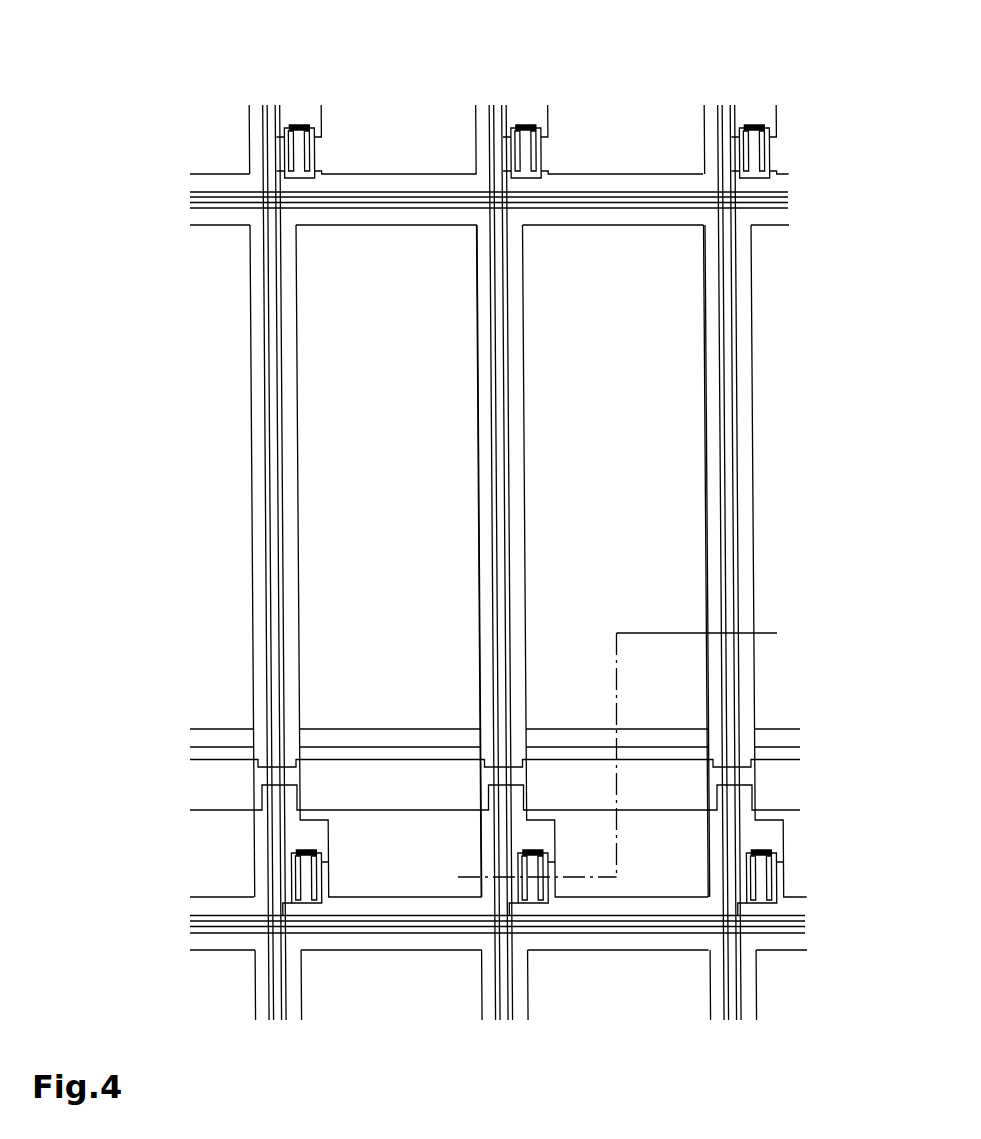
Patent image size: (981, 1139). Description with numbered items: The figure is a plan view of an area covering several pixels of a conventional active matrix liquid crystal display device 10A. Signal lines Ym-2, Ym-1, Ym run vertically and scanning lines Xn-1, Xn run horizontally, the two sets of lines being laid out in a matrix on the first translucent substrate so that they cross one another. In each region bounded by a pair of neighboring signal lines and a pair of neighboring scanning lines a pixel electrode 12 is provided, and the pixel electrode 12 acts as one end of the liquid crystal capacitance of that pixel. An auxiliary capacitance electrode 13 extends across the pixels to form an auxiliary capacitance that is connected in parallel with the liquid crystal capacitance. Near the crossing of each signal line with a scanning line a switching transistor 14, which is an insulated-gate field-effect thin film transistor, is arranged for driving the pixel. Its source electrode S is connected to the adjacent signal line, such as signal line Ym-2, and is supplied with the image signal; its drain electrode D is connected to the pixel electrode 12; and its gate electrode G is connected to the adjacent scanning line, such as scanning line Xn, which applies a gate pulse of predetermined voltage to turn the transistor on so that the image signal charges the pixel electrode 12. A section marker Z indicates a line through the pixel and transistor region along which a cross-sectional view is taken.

The liquid crystal display device 10A is at (220, 47).
The pixel electrode 12 is at (393, 382).
The auxiliary capacitance electrode 13 is at (343, 778).
The switching transistor 14 is at (264, 862).
The source electrode S is at (292, 885).
The gate electrode G is at (307, 903).
The drain electrode D is at (323, 880).
The signal line Ym-2 is at (273, 105).
The signal line Ym-1 is at (500, 107).
The signal line Ym is at (728, 108).
The scanning line Xn-1 is at (780, 193).
The scanning line Xn is at (780, 917).
The section line Z is at (620, 756).